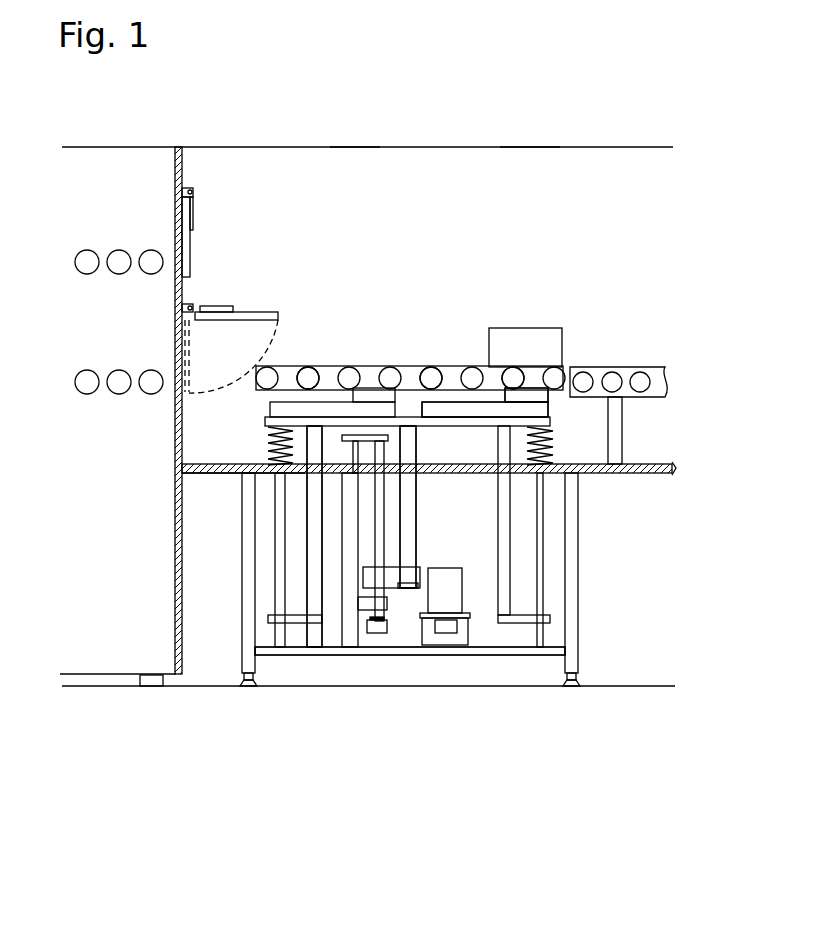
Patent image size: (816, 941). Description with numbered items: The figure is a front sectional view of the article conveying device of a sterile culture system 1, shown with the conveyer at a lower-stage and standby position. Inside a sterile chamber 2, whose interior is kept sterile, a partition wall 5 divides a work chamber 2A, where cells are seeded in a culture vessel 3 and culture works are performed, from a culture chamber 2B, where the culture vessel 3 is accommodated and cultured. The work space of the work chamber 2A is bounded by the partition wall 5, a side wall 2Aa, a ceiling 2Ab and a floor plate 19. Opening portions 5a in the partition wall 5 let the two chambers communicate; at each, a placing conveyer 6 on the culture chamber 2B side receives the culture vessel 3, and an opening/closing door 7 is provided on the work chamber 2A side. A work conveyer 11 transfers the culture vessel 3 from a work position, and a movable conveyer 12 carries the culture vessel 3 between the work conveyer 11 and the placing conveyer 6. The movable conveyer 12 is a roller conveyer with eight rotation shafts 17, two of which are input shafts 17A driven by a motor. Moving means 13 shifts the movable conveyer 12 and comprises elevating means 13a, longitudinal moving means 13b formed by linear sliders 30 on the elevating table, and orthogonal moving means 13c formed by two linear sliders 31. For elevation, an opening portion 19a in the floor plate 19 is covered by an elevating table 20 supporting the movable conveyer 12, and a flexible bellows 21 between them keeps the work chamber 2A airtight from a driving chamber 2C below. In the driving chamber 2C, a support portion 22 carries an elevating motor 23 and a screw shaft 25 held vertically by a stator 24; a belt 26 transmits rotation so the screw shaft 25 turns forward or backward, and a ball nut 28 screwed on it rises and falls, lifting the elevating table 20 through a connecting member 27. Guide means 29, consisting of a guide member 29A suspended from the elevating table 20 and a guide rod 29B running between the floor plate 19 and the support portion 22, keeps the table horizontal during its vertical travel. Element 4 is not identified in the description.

The sterile culture system 1 is at (428, 128).
The sterile chamber 2 is at (283, 147).
The ceiling 2Ab is at (350, 156).
The side wall 2Aa is at (522, 164).
The work chamber 2A is at (590, 207).
The culture chamber 2B is at (94, 207).
The driving chamber 2C is at (492, 503).
The partition wall 5 is at (202, 147).
The opening portion 5a is at (180, 216).
The opening/closing door 7 is at (192, 218).
The placing conveyer 6 is at (76, 268).
The transfer conveyor 4 is at (398, 334).
The rotation shaft 17 is at (312, 367).
The movable conveyer 12 is at (416, 366).
The input shaft 17A is at (513, 377).
The culture vessel 3 is at (500, 340).
The work conveyer 11 is at (652, 364).
The linear slider 30 is at (283, 402).
The linear slider 31 is at (367, 390).
The elevating table 20 is at (265, 420).
The bellows 21 is at (267, 455).
The floor plate 19 is at (203, 476).
The opening portion 19a is at (303, 488).
The connecting member 27 is at (408, 445).
The elevating means 13a is at (420, 527).
The screw shaft 25 is at (383, 496).
The ball nut 28 is at (400, 566).
The belt 26 is at (406, 628).
The elevating motor 23 is at (456, 592).
The support portion 22 is at (490, 656).
The moving means 13 is at (382, 662).
The guide means 29 is at (242, 673).
The guide rod 29B is at (273, 595).
The guide member 29A is at (316, 596).
The stator 24 is at (322, 625).
The orthogonal moving means 13c is at (553, 397).
The longitudinal moving means 13b is at (553, 410).